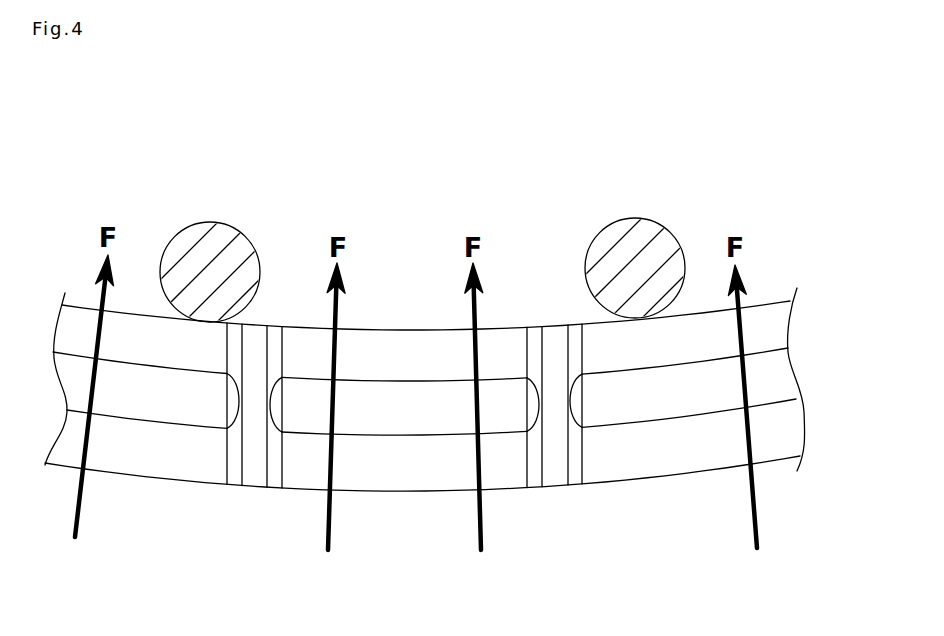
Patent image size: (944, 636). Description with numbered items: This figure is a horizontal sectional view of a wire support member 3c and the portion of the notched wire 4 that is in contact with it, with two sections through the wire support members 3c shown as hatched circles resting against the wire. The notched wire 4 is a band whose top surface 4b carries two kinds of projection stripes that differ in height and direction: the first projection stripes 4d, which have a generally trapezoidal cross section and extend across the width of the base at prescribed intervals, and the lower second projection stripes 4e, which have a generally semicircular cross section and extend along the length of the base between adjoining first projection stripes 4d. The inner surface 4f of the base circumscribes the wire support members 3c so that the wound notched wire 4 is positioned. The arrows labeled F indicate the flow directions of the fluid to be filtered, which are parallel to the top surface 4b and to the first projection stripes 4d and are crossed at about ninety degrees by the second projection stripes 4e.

The wire support member 3c is at (192, 232).
The notched wire 4 is at (285, 495).
The top surface 4b is at (177, 463).
The first projection stripe 4d is at (573, 467).
The second projection stripe 4e is at (687, 405).
The inner surface 4f is at (767, 299).